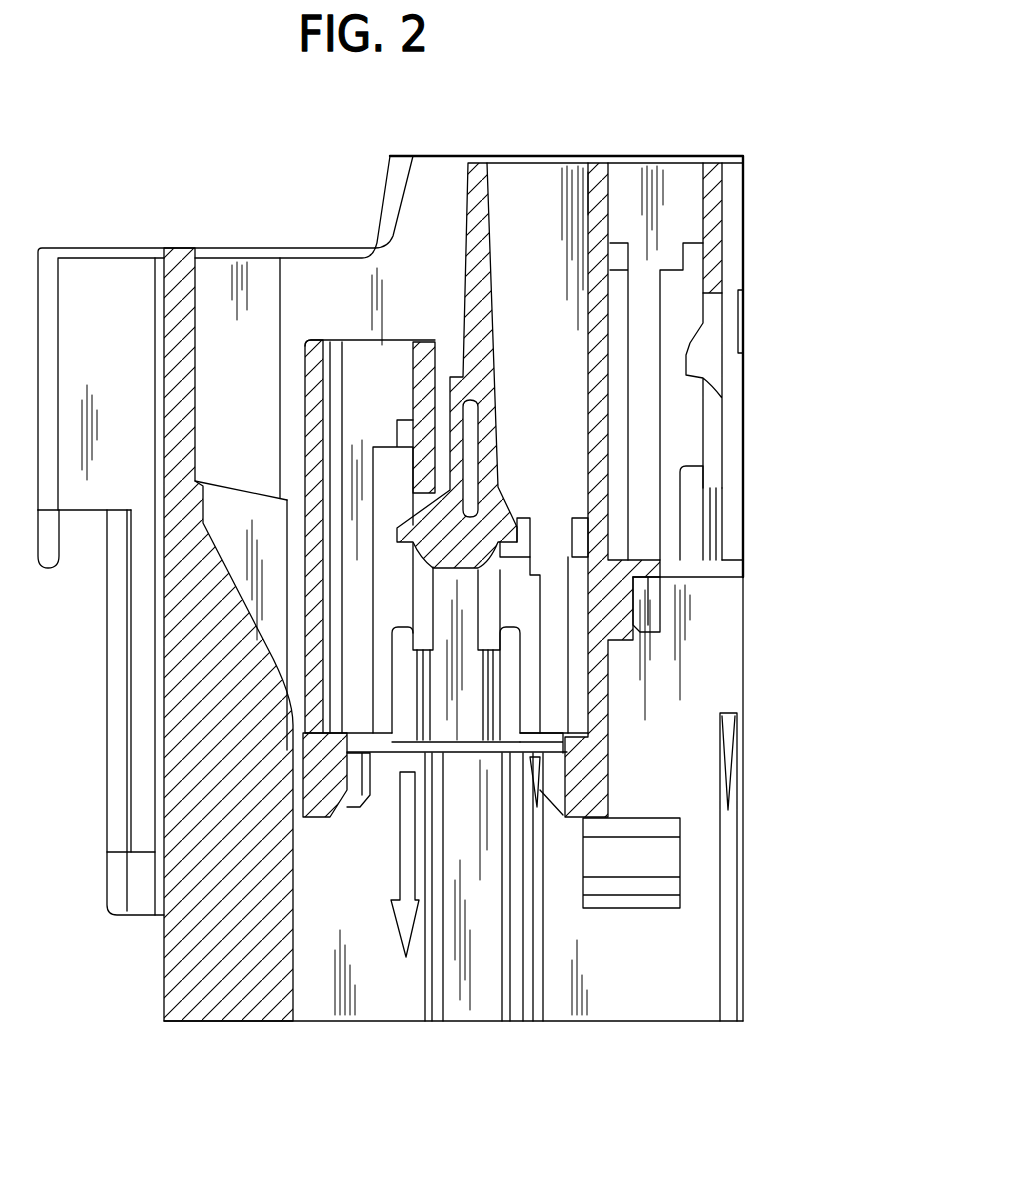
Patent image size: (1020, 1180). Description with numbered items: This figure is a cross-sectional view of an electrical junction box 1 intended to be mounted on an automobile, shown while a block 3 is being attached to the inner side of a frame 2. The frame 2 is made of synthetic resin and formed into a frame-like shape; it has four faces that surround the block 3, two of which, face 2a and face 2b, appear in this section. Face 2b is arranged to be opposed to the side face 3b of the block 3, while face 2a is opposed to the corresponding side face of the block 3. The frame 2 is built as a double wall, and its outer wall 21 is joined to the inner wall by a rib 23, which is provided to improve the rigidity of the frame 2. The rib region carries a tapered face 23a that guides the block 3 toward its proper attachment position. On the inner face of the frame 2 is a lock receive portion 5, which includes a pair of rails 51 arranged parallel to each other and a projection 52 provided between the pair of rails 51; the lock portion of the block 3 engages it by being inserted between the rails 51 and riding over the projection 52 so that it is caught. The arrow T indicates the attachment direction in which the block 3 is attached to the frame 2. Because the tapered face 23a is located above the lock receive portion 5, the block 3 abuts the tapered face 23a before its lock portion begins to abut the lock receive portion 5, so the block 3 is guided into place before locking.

The electrical junction box 1 is at (733, 124).
The frame 2 is at (108, 688).
The face 2a is at (425, 212).
The face 2b is at (294, 903).
The outer wall 21 is at (183, 331).
The rib 23 is at (220, 676).
The tapered face 23a is at (238, 568).
The block 3 is at (305, 360).
The side face 3b is at (305, 397).
The lock receive portion 5 is at (630, 953).
The rails 51 is at (483, 937).
The projection 52 is at (655, 860).
The arrow indicating attachment direction T is at (403, 827).